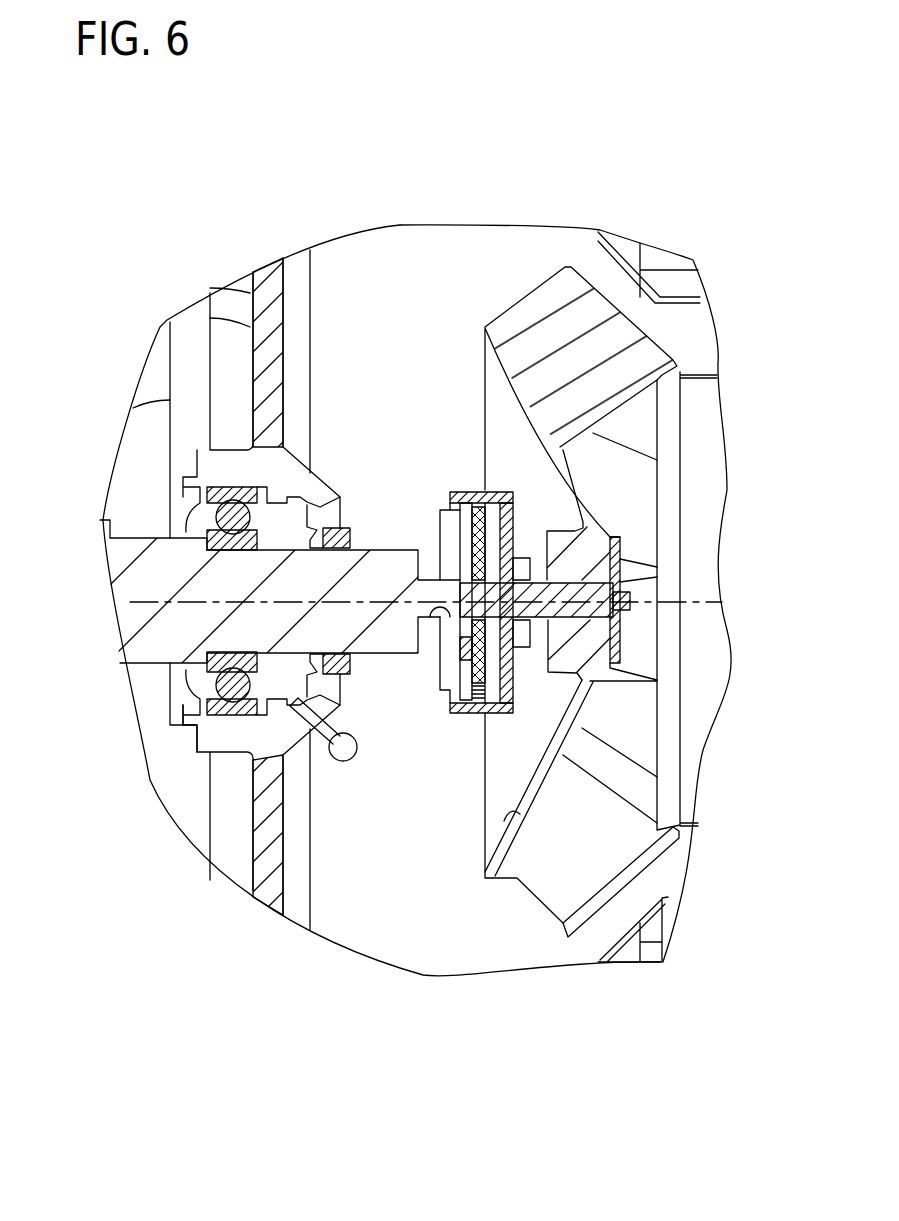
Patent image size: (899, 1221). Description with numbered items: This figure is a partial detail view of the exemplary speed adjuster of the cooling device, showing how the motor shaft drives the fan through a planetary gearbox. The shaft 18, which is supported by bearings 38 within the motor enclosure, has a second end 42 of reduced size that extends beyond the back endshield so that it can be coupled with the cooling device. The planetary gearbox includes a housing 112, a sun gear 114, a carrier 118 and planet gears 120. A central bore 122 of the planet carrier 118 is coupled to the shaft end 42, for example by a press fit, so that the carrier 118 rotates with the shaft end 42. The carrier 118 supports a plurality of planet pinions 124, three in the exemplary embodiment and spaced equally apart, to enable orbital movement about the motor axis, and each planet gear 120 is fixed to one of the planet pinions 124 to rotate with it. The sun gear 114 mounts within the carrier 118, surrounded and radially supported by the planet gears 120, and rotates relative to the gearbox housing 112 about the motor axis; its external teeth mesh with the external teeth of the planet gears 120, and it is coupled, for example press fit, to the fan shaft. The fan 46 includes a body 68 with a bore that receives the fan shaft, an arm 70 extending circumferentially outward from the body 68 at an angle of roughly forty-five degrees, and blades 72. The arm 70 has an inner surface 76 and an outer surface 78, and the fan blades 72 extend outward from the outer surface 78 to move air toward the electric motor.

The shaft 18 is at (215, 588).
The bearings 38 is at (230, 487).
The second end 42 is at (438, 613).
The fan 46 is at (630, 617).
The body 68 is at (580, 650).
The arm 70 is at (538, 783).
The blades 72 is at (525, 877).
The inner surface 76 is at (512, 827).
The outer surface 78 is at (512, 813).
The housing 112 is at (484, 492).
The sun gear 114 is at (484, 490).
The carrier 118 is at (440, 532).
The planet gears 120 is at (514, 522).
The central bore 122 is at (128, 551).
The planet pinions 124 is at (474, 530).